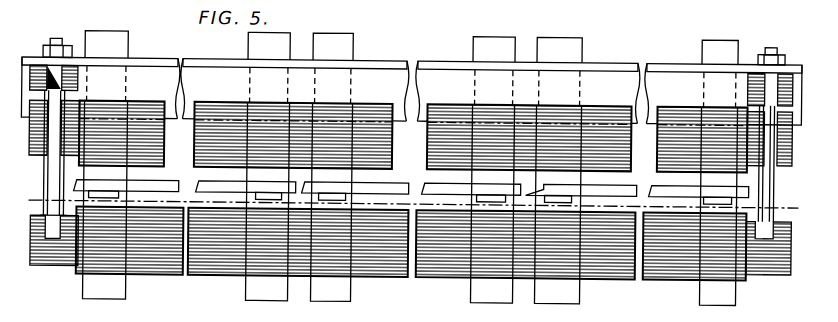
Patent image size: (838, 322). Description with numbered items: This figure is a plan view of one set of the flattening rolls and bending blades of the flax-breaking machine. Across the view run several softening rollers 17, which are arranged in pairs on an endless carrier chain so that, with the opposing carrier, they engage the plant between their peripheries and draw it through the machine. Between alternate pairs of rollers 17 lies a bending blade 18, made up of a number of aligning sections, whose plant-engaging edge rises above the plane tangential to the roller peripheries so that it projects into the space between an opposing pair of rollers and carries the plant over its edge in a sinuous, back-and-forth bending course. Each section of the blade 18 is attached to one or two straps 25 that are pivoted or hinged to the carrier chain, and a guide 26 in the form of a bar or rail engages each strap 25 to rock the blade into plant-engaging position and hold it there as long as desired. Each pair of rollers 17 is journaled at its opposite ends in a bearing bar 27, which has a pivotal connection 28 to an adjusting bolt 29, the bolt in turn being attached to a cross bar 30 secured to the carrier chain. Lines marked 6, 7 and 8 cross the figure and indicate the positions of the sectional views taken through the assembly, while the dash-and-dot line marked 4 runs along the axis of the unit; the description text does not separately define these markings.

The axis line 4 is at (45, 200).
The section line 6- 6 is at (153, 293).
The section line 7- 7 is at (377, 291).
The section line 8- 8 is at (608, 294).
The softening rollers 17 is at (391, 139).
The bending blades 18 is at (208, 180).
The straps 25 is at (411, 62).
The guide 26 is at (97, 290).
The bearing bar 27 is at (58, 180).
The pivotal connection 28 is at (52, 86).
The adjusting bolt 29 is at (57, 44).
The cross bar 30 is at (211, 64).